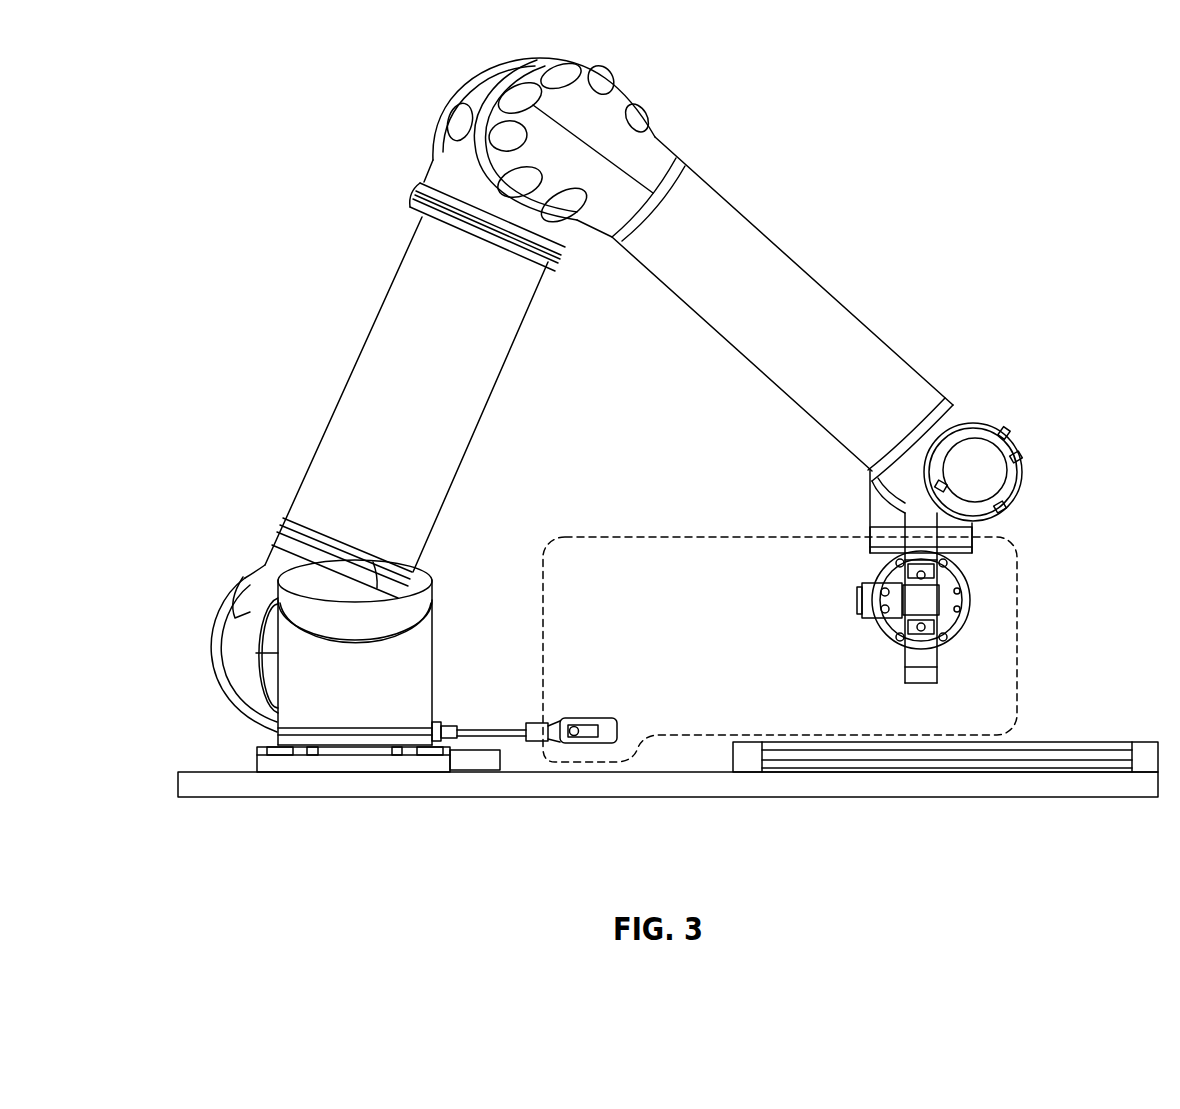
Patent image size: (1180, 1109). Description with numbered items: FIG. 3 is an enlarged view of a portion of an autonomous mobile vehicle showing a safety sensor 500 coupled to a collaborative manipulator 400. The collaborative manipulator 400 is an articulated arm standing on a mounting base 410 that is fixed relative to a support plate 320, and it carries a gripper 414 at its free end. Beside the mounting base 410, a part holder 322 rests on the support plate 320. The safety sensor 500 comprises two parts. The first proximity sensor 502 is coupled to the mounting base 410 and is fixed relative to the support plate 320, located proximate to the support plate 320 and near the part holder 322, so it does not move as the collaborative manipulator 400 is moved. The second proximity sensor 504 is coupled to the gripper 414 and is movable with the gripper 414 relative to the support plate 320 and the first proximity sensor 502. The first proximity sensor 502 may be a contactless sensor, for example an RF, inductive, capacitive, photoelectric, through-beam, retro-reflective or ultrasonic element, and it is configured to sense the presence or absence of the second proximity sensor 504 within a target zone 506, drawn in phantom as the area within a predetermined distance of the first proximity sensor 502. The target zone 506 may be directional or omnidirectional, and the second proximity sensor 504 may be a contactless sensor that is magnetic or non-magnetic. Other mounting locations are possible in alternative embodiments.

The support plate 320 is at (632, 787).
The part holder 322 is at (1047, 742).
The collaborative manipulator 400 is at (653, 447).
The mounting base 410 is at (318, 705).
The gripper 414 is at (930, 658).
The safety sensor 500 is at (735, 609).
The first proximity sensor 502 is at (587, 738).
The second proximity sensor 504 is at (862, 600).
The target zone 506 is at (780, 537).